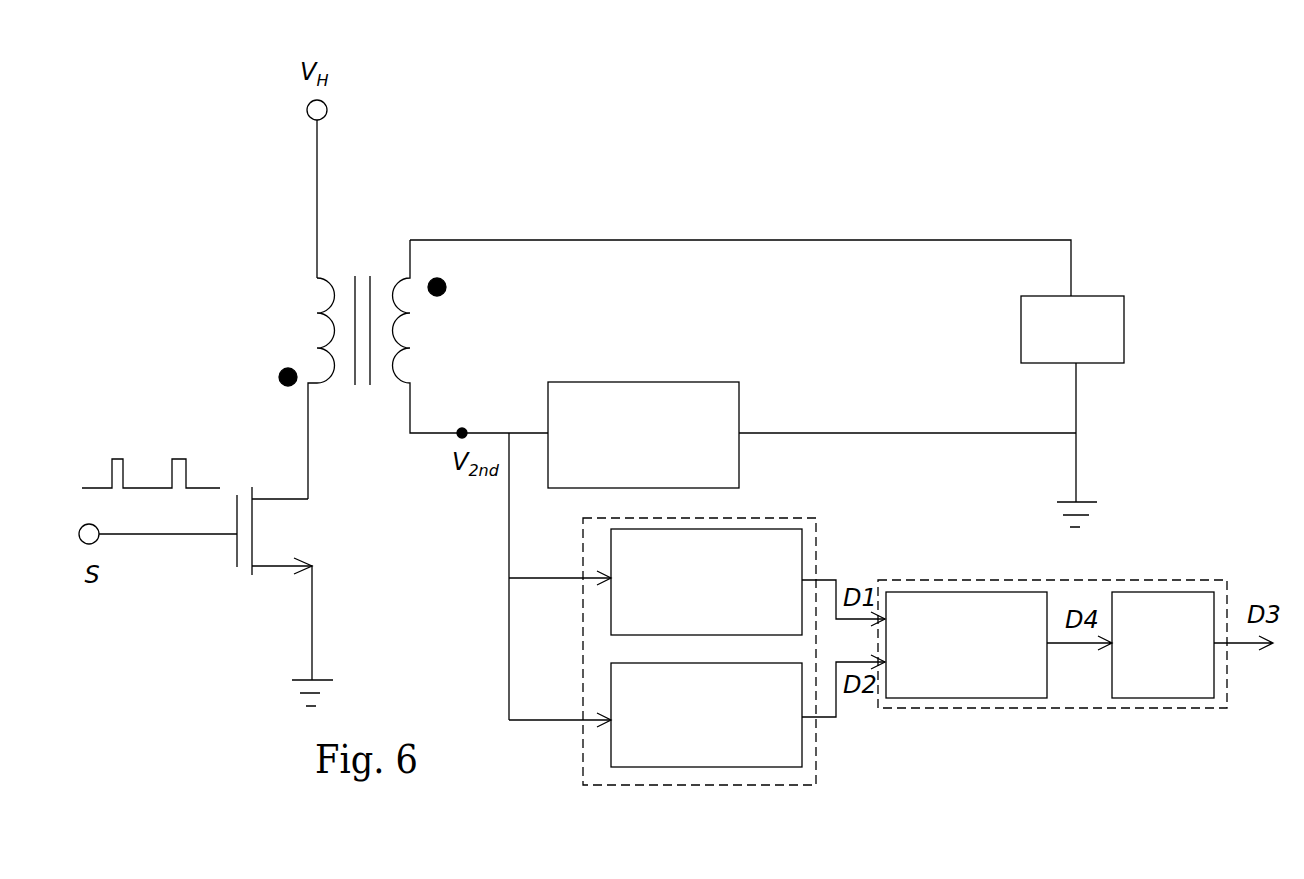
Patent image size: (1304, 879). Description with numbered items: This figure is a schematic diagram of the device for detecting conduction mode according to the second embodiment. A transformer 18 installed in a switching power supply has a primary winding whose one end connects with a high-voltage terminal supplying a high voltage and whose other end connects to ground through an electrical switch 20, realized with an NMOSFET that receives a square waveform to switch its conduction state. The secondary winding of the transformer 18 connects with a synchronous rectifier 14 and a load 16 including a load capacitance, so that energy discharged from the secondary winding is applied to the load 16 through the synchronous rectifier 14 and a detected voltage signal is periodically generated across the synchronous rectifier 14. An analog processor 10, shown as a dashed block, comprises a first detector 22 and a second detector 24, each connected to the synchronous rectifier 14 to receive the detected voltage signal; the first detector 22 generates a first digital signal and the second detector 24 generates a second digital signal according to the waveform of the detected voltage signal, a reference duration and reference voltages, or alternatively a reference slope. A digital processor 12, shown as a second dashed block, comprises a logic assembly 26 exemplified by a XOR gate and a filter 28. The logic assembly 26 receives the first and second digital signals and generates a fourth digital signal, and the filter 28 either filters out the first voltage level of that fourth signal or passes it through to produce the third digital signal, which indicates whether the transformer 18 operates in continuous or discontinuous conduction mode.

The analog processor 10 is at (716, 656).
The digital processor 12 is at (1052, 643).
The synchronous rectifier 14 is at (740, 398).
The load 16 is at (1098, 296).
The transformer 18 is at (410, 240).
The electrical switch 20 is at (312, 566).
The first detector 22 is at (802, 545).
The second detector 24 is at (611, 745).
The logic assembly 26 is at (970, 698).
The filter 28 is at (1165, 592).